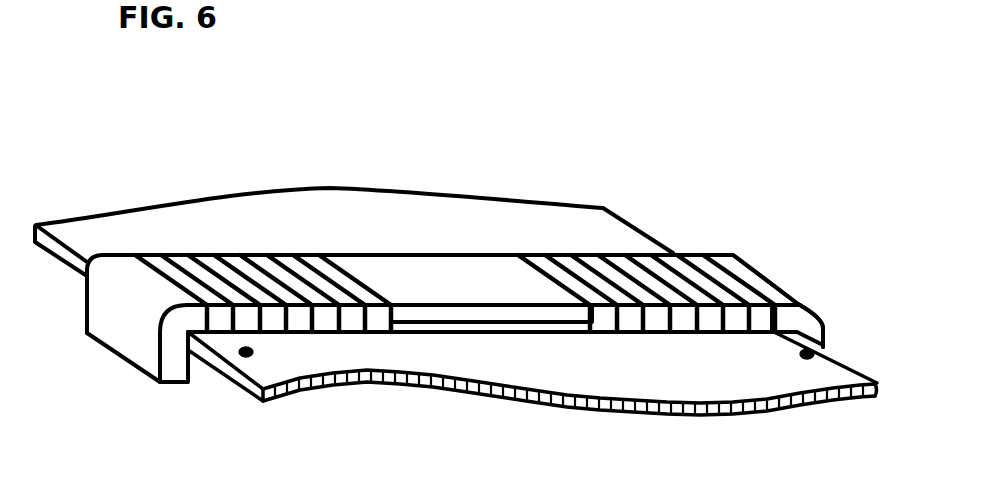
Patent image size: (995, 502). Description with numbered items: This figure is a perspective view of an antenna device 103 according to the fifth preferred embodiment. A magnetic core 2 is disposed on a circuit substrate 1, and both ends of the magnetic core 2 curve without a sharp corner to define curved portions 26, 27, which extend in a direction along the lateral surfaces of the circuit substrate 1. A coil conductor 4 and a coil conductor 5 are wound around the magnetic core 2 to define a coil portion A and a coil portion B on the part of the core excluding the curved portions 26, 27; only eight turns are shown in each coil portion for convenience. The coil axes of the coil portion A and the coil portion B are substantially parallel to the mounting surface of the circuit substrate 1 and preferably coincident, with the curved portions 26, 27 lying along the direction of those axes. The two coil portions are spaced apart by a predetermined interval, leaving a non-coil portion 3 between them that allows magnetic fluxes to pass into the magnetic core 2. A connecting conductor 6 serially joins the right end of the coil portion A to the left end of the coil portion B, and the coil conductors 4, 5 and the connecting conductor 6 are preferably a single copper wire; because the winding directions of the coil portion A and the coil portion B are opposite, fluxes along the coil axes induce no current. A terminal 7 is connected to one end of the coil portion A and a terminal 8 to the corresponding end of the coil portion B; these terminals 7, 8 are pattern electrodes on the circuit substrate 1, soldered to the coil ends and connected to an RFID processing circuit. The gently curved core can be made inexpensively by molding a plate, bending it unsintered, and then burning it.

The antenna device 103 is at (104, 58).
The circuit substrate 1 is at (455, 236).
The magnetic core 2 is at (380, 323).
The non-coil portion 3 is at (428, 277).
The coil conductor 4 is at (312, 322).
The coil conductor 5 is at (718, 322).
The connecting conductor 6 is at (497, 322).
The terminal 7 is at (244, 355).
The terminal 8 is at (803, 358).
The curved portion 26 is at (98, 281).
The curved portion 27 is at (762, 270).
The coil portion A is at (329, 247).
The coil portion B is at (709, 246).